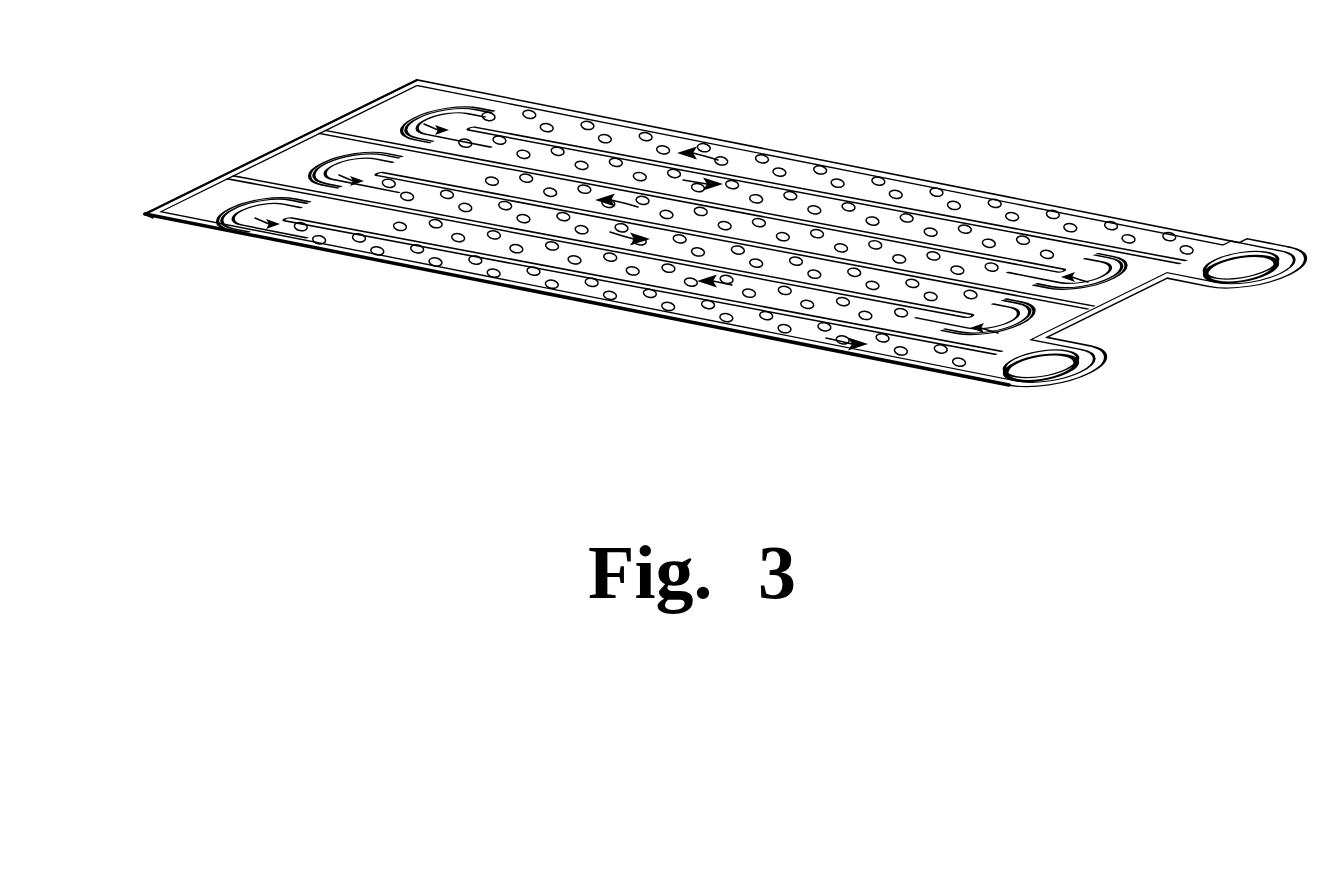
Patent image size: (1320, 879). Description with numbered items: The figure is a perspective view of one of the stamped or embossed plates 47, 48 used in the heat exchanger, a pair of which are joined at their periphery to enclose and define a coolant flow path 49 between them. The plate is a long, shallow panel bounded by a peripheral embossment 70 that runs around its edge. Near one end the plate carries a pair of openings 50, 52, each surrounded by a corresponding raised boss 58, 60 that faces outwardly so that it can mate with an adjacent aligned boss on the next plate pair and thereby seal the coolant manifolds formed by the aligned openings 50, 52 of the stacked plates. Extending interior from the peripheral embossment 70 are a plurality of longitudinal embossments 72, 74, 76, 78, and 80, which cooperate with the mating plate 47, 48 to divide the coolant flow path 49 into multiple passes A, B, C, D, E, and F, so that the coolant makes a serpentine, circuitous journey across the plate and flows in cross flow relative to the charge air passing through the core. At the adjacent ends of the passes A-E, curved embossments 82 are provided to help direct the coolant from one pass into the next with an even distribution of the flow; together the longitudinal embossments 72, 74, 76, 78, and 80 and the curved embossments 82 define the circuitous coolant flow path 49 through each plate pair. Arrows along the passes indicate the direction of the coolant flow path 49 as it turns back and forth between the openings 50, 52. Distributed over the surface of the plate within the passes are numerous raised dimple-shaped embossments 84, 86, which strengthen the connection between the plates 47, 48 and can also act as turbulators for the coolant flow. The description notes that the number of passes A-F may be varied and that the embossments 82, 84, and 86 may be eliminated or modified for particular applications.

The stamped plate 47 is at (172, 190).
The stamped plate 48 is at (256, 147).
The coolant flow path 49 is at (262, 216).
The opening 50 is at (1243, 272).
The opening 52 is at (1040, 375).
The raised boss 58 is at (1270, 255).
The raised boss 60 is at (1102, 366).
The peripheral embossment 70 is at (140, 217).
The longitudinal embossment 72 is at (563, 127).
The longitudinal embossment 74 is at (523, 130).
The longitudinal embossment 76 is at (483, 110).
The longitudinal embossment 78 is at (372, 205).
The longitudinal embossment 80 is at (290, 218).
The curved embossment 82 is at (227, 233).
The dimple-shaped embossment 84 is at (744, 261).
The dimple-shaped embossment 86 is at (490, 278).
The pass A is at (945, 197).
The pass B is at (982, 235).
The pass C is at (1020, 272).
The pass D is at (973, 323).
The pass E is at (927, 333).
The pass F is at (887, 343).